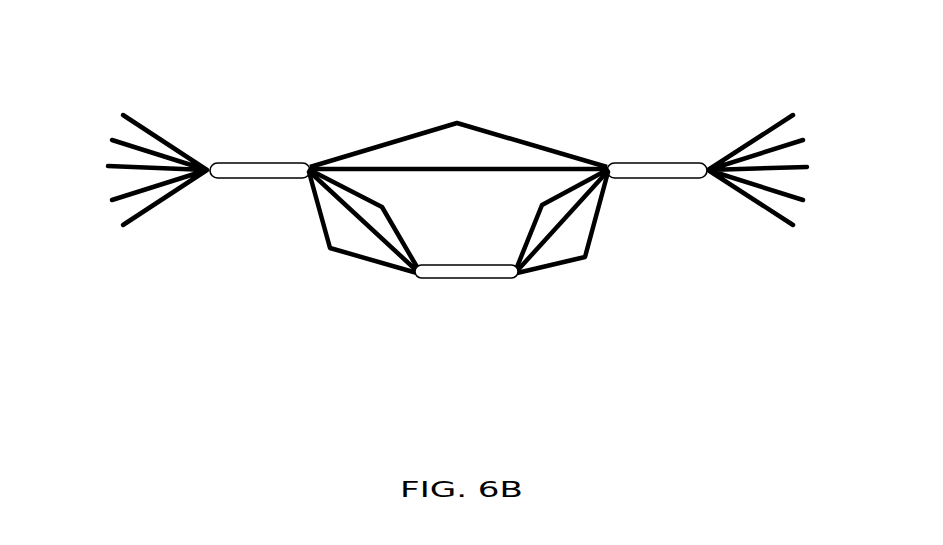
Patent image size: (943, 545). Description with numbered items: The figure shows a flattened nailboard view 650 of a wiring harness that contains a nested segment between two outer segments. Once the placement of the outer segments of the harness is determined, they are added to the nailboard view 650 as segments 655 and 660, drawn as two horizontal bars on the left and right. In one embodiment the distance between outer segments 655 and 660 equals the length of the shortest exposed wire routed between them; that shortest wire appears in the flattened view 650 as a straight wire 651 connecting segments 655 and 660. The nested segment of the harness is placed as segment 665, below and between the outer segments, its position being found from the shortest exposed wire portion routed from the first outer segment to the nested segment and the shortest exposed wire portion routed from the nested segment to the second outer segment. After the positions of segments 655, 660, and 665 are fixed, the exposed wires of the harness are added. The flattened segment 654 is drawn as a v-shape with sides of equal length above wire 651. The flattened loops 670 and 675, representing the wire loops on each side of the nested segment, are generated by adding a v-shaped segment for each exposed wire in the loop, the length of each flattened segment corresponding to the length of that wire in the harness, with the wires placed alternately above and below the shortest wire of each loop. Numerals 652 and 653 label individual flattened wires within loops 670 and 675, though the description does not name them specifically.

The flattened nailboard view 650 is at (483, 98).
The wire 651 is at (453, 171).
The left lower link 652 is at (357, 222).
The right lower link 653 is at (610, 215).
The flattened segment 654 is at (379, 141).
The outer segment 655 is at (254, 162).
The outer segment 660 is at (654, 162).
The segment 665 is at (463, 280).
The flattened loop 670 is at (325, 257).
The flattened loop 675 is at (616, 267).